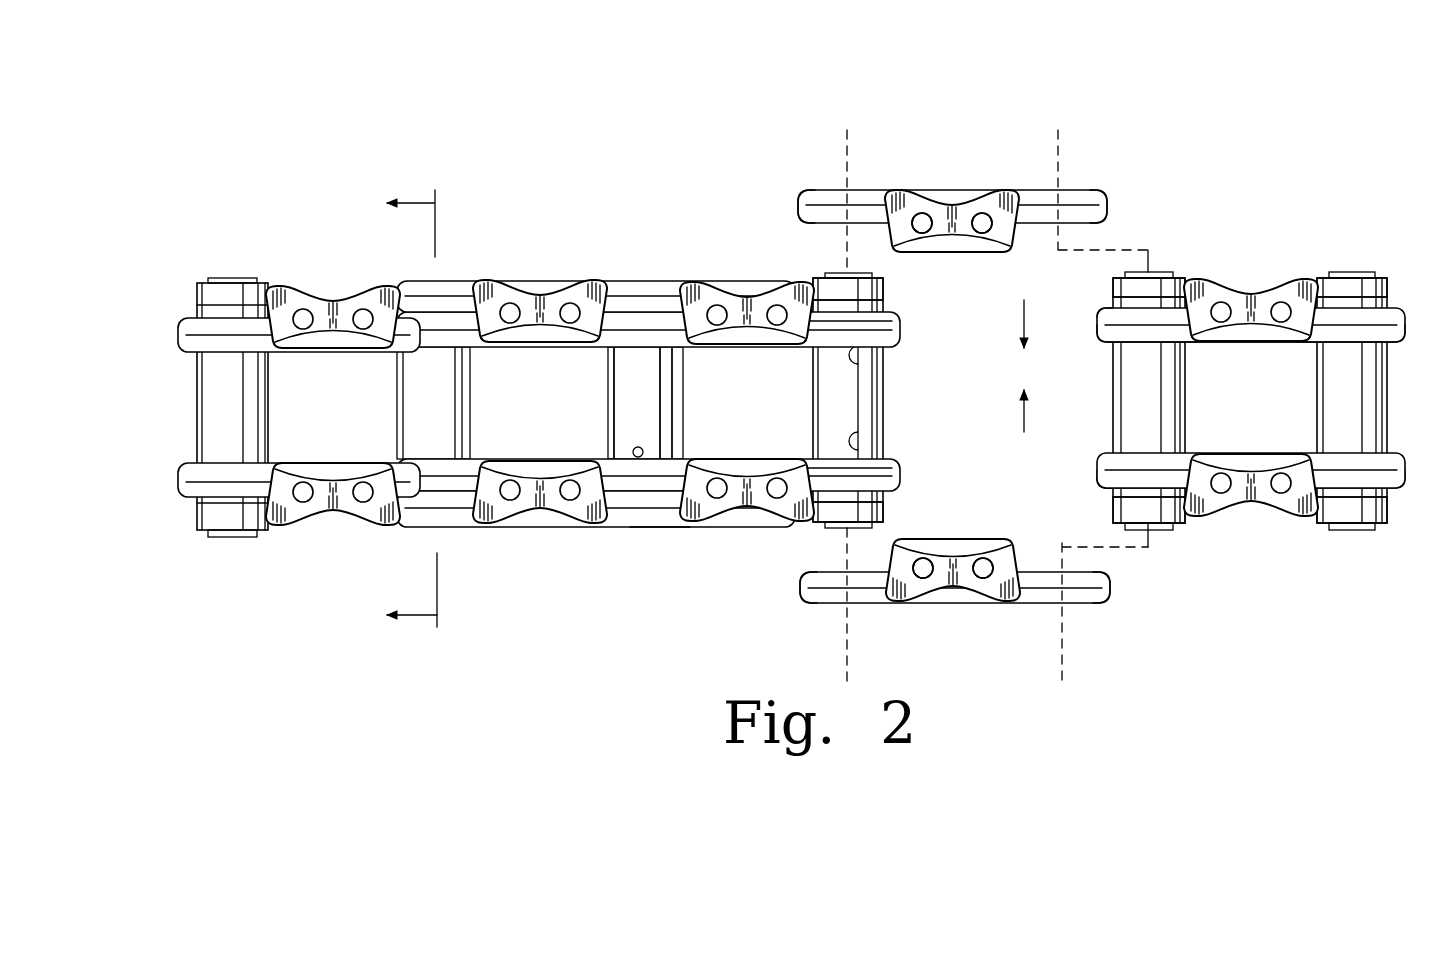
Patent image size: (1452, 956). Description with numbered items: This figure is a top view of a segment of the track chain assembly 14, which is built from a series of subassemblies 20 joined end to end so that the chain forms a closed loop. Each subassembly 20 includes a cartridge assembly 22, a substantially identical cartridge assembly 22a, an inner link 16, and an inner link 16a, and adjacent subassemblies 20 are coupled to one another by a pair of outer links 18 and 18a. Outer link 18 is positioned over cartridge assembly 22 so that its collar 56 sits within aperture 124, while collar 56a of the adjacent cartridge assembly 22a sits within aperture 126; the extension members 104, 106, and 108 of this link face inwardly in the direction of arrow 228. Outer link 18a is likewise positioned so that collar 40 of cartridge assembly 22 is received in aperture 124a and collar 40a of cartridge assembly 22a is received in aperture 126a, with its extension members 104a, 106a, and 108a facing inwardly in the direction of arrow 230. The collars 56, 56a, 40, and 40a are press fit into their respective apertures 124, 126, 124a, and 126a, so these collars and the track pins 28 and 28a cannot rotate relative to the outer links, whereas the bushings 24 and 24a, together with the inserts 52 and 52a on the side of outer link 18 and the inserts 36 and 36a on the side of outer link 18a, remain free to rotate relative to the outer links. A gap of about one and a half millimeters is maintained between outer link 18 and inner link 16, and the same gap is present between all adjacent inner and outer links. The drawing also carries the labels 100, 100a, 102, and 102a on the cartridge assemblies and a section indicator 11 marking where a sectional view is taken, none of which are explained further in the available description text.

The track chain assembly 14 is at (386, 146).
The inner link 16 is at (183, 345).
The inner link 16a is at (185, 492).
The outer link 18 is at (455, 283).
The outer link 18a is at (460, 530).
The subassembly 20 is at (333, 265).
The cartridge assembly 22 is at (805, 378).
The cartridge assembly 22a is at (596, 374).
The bushing 24 is at (405, 378).
The bushing 24a is at (263, 416).
The track pin 28 is at (838, 272).
The track pin 28a is at (243, 280).
The insert 36 is at (900, 487).
The insert 36a is at (1115, 497).
The collar 40 is at (885, 505).
The collar 40a is at (1125, 530).
The insert 52 is at (893, 312).
The insert 52a is at (1113, 300).
The collar 56 is at (880, 290).
The collar 56a is at (1180, 282).
The groove 100 is at (875, 366).
The groove 100a is at (860, 436).
The bushing 102 is at (645, 355).
The bushing 102a is at (657, 527).
The extension member 104 is at (955, 262).
The extension member 104a is at (970, 520).
The extension member 106 is at (985, 255).
The extension member 106a is at (875, 530).
The extension member 108 is at (907, 265).
The extension member 108a is at (1005, 520).
The aperture 124 is at (815, 190).
The aperture 124a is at (825, 610).
The aperture 126 is at (1085, 192).
The aperture 126a is at (1085, 608).
The arrow 228 is at (1024, 313).
The arrow 230 is at (1024, 415).
The section line 11 is at (433, 410).